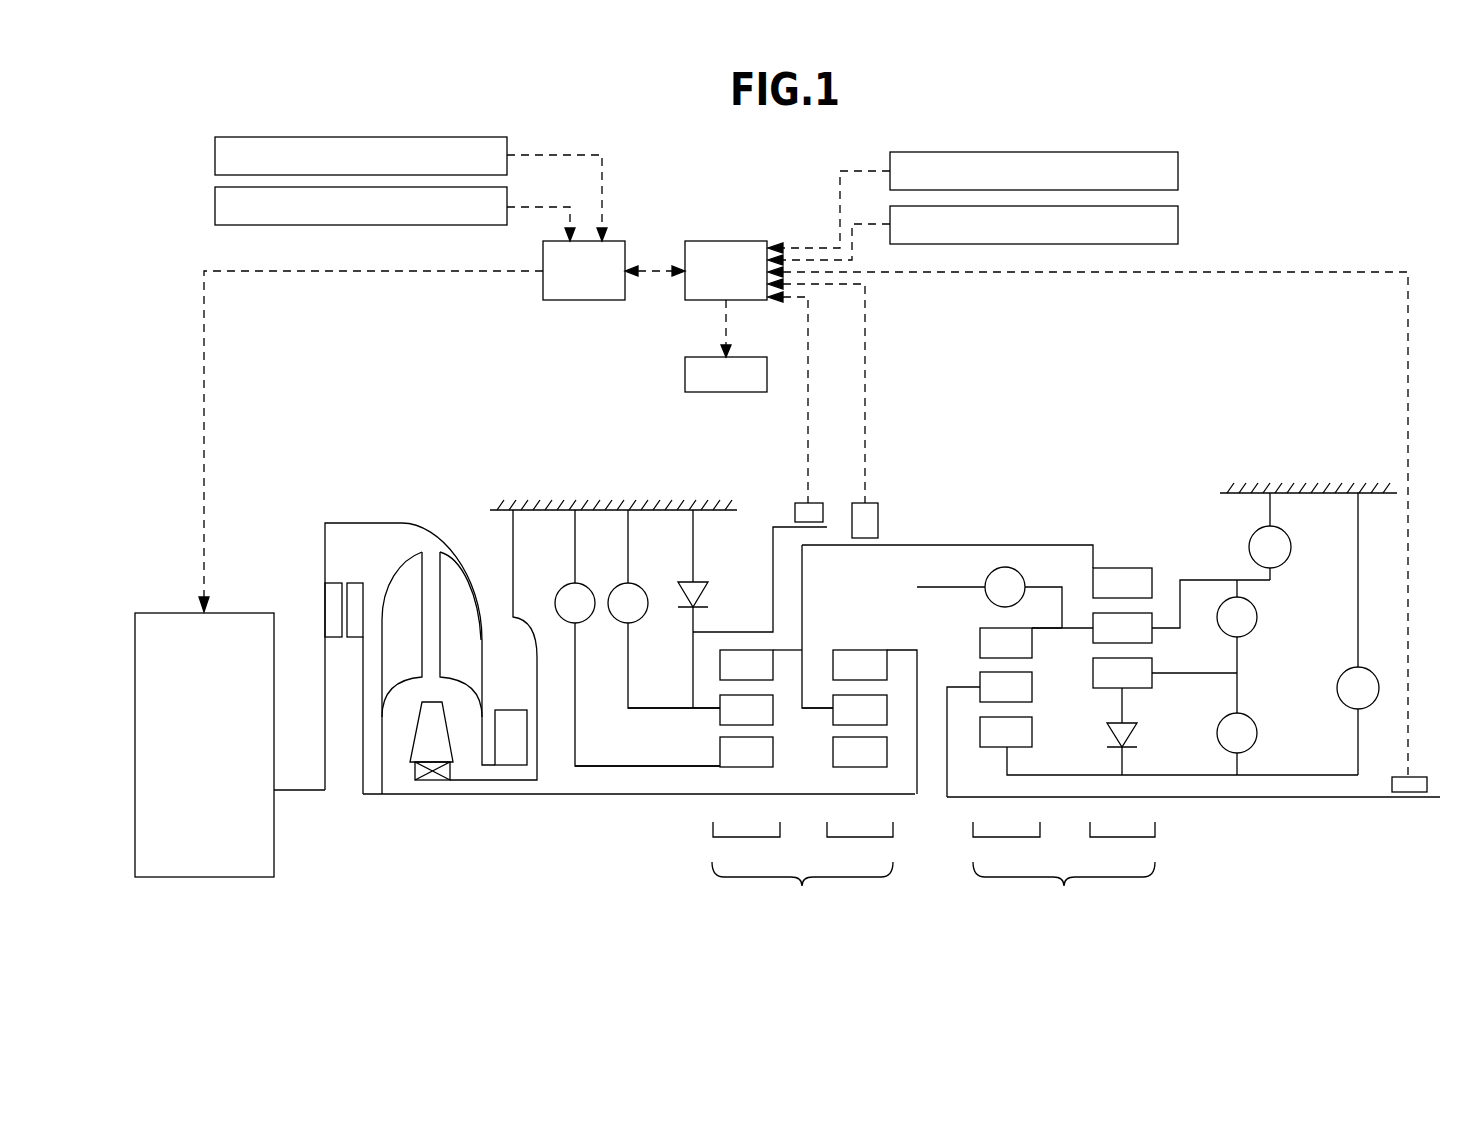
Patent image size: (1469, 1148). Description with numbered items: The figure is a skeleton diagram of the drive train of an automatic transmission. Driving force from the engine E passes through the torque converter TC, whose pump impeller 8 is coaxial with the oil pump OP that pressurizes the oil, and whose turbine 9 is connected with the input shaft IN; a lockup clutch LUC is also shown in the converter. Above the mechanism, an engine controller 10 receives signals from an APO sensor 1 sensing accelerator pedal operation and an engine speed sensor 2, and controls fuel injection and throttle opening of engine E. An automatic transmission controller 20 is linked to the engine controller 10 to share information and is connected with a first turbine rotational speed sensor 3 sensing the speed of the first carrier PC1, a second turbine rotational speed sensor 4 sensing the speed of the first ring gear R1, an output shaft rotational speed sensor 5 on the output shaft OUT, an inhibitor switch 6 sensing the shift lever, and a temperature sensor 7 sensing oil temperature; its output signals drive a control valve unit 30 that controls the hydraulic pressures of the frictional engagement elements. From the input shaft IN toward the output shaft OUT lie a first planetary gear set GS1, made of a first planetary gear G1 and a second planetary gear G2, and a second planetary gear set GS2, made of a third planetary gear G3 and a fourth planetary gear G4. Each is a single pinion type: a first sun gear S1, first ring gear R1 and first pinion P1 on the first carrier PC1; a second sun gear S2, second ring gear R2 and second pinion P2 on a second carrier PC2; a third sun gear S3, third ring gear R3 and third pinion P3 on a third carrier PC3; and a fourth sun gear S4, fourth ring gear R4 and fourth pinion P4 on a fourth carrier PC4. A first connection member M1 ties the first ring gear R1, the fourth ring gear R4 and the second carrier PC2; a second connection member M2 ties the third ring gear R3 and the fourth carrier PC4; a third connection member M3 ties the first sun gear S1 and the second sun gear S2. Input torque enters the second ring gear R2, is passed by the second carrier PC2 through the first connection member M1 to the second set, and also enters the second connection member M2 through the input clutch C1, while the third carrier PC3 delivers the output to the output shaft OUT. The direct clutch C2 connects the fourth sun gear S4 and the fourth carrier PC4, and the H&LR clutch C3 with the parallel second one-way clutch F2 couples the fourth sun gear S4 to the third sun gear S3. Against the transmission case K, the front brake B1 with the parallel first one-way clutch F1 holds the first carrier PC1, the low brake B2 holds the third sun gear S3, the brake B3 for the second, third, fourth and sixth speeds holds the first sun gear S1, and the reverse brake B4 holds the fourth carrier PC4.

The APO sensor 1 is at (215, 156).
The engine speed sensor 2 is at (215, 207).
The first turbine rotational speed sensor 3 is at (793, 510).
The second turbine rotational speed sensor 4 is at (878, 523).
The output shaft rotational speed sensor 5 is at (1418, 777).
The inhibitor switch 6 is at (1178, 171).
The temperature sensor 7 is at (1178, 224).
The pump impeller 8 is at (457, 585).
The turbine 9 is at (408, 585).
The engine controller 10 is at (590, 300).
The automatic transmission controller 20 is at (726, 241).
The control valve unit 30 is at (685, 375).
The engine E is at (162, 613).
The torque converter TC is at (386, 608).
The transmission case K is at (543, 510).
The lockup clutch LUC is at (338, 572).
The oil pump OP is at (508, 710).
The input shaft IN is at (555, 794).
The output shaft OUT is at (1265, 797).
The front brake B1 is at (664, 609).
The low brake B2 is at (1358, 634).
The 2346 brake B3 is at (637, 638).
The reverse brake B4 is at (1270, 536).
The input clutch C1 is at (989, 597).
The direct clutch C2 is at (1237, 646).
The H&LR clutch C3 is at (1237, 744).
The first one-way clutch F1 is at (705, 576).
The second one-way clutch F2 is at (1142, 737).
The first ring gear R1 is at (761, 665).
The second ring gear R2 is at (875, 722).
The third ring gear R3 is at (1036, 643).
The fourth ring gear R4 is at (1122, 583).
The first pinion P1 is at (746, 710).
The second pinion P2 is at (860, 710).
The third pinion P3 is at (1006, 687).
The fourth pinion P4 is at (1122, 628).
The first sun gear S1 is at (746, 752).
The second sun gear S2 is at (860, 752).
The third sun gear S3 is at (1169, 746).
The fourth sun gear S4 is at (1165, 690).
The first carrier PC1 is at (707, 708).
The second carrier PC2 is at (813, 712).
The third carrier PC3 is at (963, 683).
The fourth carrier PC4 is at (1162, 631).
The first connection member M1 is at (1008, 545).
The second connection member M2 is at (1047, 630).
The third connection member M3 is at (808, 768).
The first planetary gear G1 is at (746, 843).
The second planetary gear G2 is at (860, 843).
The third planetary gear G3 is at (1006, 843).
The fourth planetary gear G4 is at (1122, 843).
The first planetary gear set GS1 is at (802, 884).
The second planetary gear set GS2 is at (1064, 884).